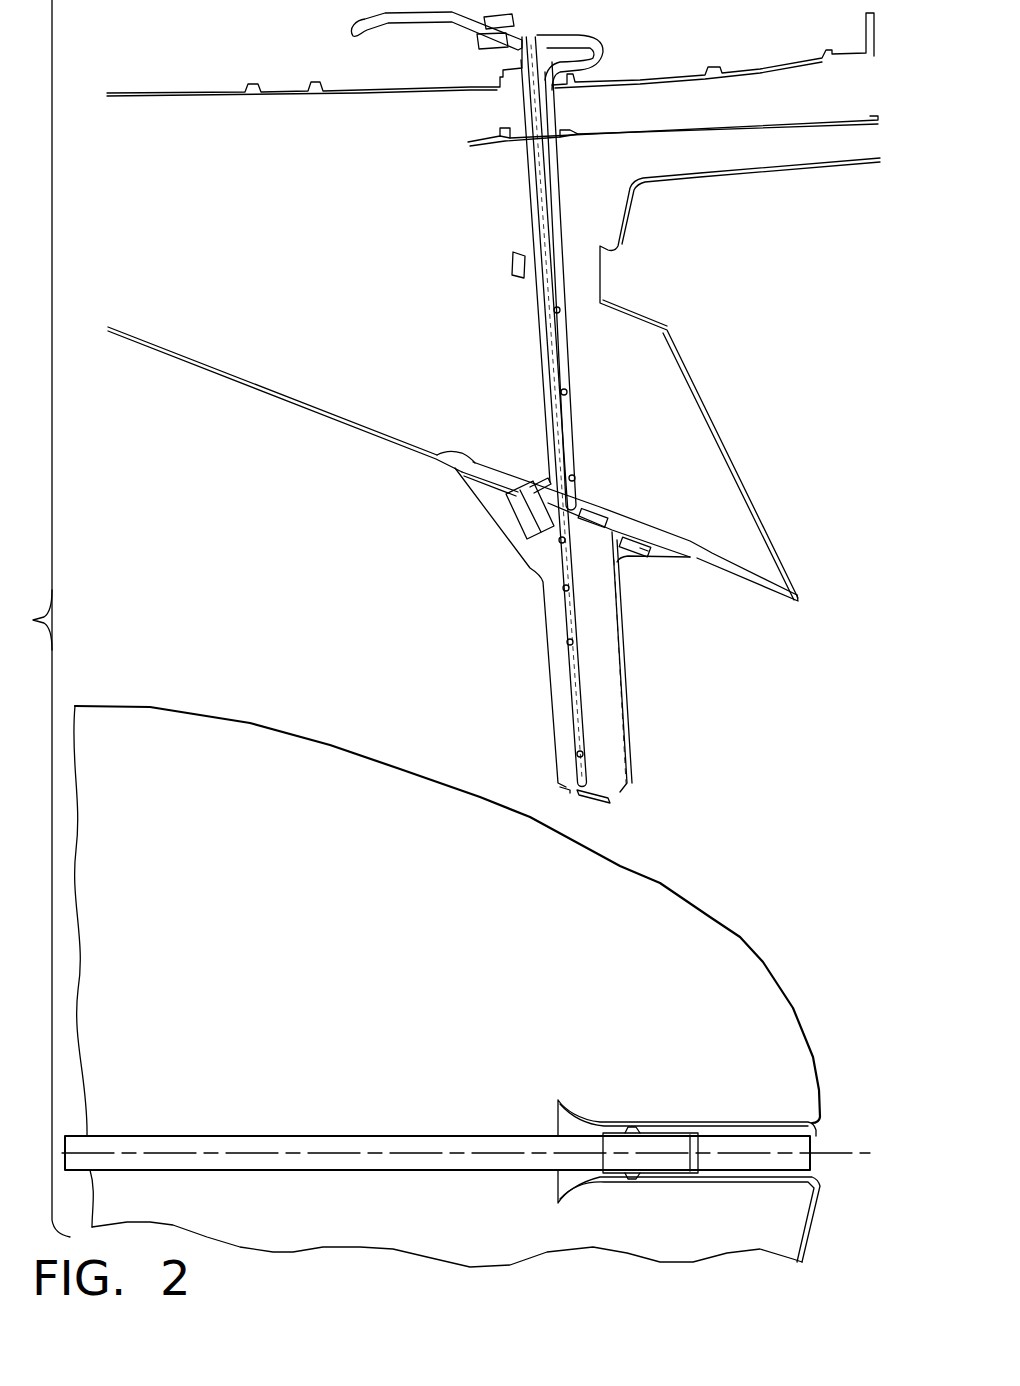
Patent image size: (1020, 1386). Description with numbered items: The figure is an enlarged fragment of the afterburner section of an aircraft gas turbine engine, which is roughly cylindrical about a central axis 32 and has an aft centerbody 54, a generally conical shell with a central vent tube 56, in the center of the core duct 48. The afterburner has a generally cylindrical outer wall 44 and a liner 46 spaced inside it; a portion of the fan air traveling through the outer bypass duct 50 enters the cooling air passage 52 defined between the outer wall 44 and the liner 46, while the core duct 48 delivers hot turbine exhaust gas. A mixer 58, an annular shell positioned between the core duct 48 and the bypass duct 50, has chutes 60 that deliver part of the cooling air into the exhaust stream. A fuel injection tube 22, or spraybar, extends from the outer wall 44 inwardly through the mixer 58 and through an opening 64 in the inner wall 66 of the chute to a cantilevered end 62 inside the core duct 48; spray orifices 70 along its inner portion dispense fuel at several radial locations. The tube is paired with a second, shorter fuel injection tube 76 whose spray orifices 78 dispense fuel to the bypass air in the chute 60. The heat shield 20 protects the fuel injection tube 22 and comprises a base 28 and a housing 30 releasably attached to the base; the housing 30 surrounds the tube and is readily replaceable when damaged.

The heat shield 20 is at (589, 407).
The fuel injection tube 22 is at (588, 697).
The base 28 is at (675, 558).
The housing 30 is at (623, 652).
The central axis 32 is at (832, 1152).
The outer wall 44 is at (380, 95).
The liner 46 is at (808, 122).
The core duct 48 is at (174, 542).
The bypass duct 50 is at (208, 240).
The cooling air passage 52 is at (686, 117).
The aft centerbody 54 is at (782, 990).
The central vent tube 56 is at (752, 1122).
The mixer 58 is at (738, 412).
The chute 60 is at (752, 497).
The cantilevered end 62 is at (592, 792).
The opening 64 is at (598, 496).
The inner wall 66 is at (760, 577).
The spray orifices 70 is at (560, 541).
The second fuel injection tube 76 is at (563, 291).
The spray orifices 78 is at (561, 312).